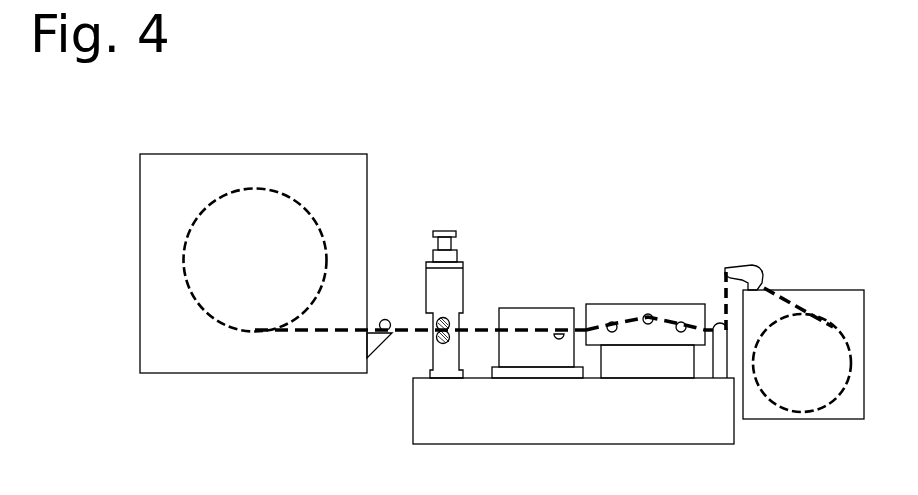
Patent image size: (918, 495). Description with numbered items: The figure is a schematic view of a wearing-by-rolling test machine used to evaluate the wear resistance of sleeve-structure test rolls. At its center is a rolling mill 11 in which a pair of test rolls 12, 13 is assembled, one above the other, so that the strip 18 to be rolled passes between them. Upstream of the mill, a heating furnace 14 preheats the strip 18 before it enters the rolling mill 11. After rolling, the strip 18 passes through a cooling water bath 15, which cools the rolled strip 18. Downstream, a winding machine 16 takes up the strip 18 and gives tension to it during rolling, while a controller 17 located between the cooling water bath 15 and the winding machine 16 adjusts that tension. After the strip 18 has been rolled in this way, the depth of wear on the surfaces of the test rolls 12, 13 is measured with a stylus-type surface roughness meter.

The rolling mill 11 is at (426, 275).
The test roll 12 is at (446, 318).
The test roll 13 is at (451, 343).
The heating furnace 14 is at (337, 202).
The cooling water bath 15 is at (533, 348).
The winding machine 16 is at (824, 303).
The controller 17 is at (648, 310).
The strip 18 is at (313, 334).